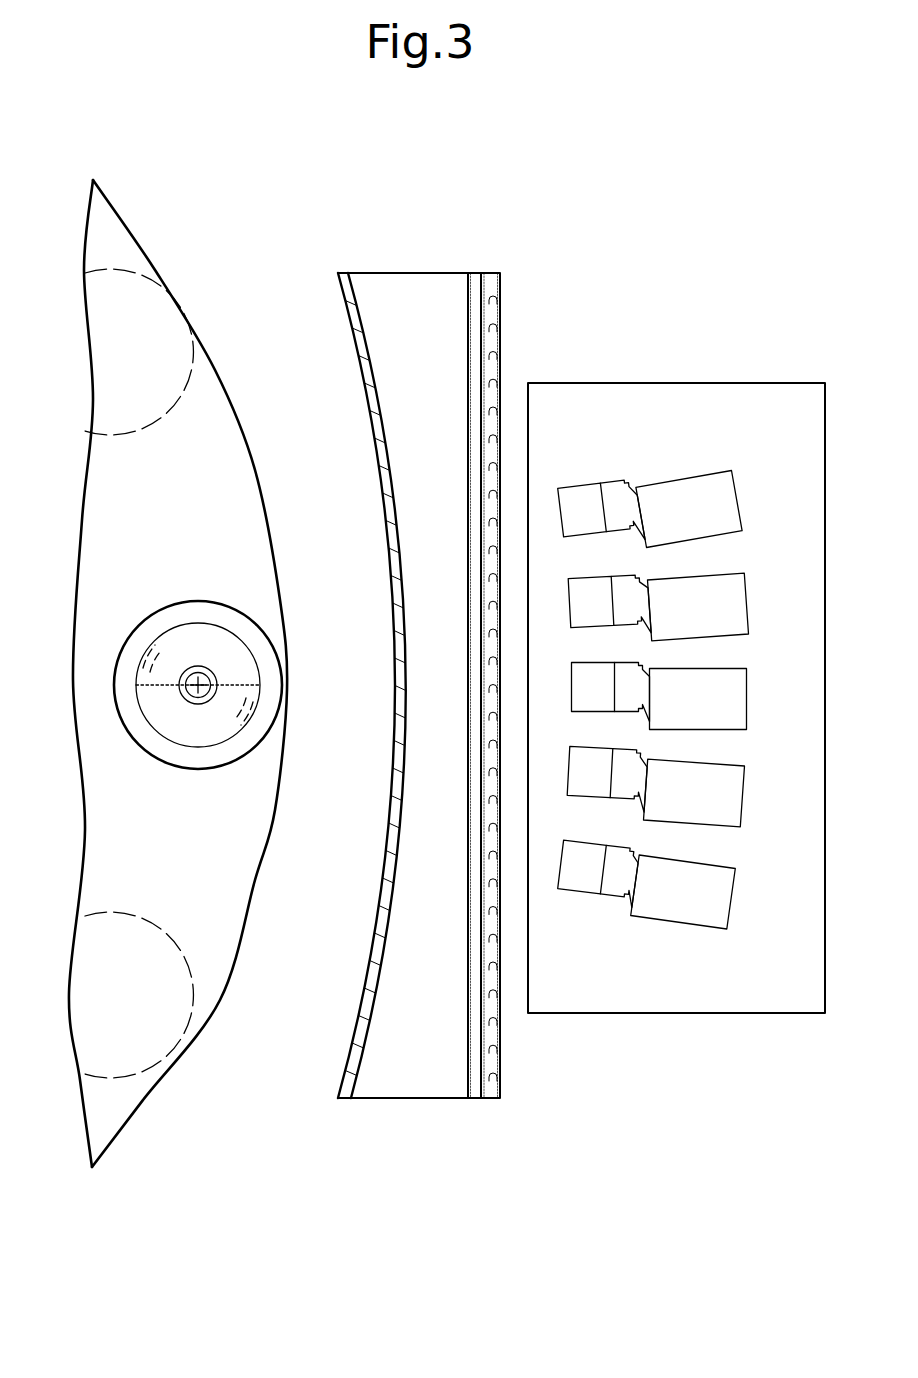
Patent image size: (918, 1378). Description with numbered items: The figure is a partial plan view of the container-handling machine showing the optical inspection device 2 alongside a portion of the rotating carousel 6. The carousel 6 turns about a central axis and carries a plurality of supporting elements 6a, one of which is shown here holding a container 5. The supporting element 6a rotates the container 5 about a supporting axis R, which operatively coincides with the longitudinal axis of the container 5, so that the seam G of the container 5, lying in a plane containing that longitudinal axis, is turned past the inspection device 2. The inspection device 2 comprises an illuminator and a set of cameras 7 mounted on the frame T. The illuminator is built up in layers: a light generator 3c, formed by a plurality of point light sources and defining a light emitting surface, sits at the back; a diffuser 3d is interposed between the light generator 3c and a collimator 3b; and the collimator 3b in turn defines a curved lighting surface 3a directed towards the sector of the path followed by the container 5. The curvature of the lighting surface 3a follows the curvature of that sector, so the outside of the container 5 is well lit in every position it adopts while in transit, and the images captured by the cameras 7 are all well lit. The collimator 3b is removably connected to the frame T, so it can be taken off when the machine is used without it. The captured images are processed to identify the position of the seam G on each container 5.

The optical inspection device 2 is at (519, 1074).
The lighting surface 3a is at (348, 329).
The collimator 3b is at (383, 950).
The light generator 3c is at (498, 341).
The diffuser 3d is at (464, 360).
The frame T is at (432, 272).
The container 5 is at (160, 738).
The carousel 6 is at (190, 867).
The supporting element 6a is at (173, 613).
The supporting axis R is at (183, 678).
The seam G is at (237, 683).
The camera 7 is at (653, 700).